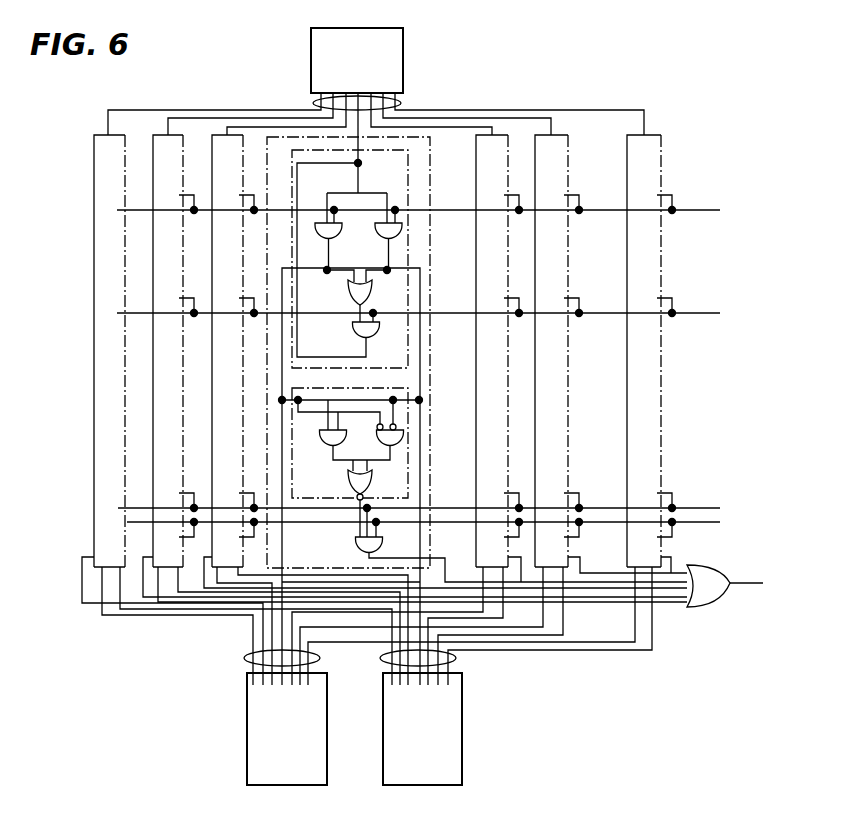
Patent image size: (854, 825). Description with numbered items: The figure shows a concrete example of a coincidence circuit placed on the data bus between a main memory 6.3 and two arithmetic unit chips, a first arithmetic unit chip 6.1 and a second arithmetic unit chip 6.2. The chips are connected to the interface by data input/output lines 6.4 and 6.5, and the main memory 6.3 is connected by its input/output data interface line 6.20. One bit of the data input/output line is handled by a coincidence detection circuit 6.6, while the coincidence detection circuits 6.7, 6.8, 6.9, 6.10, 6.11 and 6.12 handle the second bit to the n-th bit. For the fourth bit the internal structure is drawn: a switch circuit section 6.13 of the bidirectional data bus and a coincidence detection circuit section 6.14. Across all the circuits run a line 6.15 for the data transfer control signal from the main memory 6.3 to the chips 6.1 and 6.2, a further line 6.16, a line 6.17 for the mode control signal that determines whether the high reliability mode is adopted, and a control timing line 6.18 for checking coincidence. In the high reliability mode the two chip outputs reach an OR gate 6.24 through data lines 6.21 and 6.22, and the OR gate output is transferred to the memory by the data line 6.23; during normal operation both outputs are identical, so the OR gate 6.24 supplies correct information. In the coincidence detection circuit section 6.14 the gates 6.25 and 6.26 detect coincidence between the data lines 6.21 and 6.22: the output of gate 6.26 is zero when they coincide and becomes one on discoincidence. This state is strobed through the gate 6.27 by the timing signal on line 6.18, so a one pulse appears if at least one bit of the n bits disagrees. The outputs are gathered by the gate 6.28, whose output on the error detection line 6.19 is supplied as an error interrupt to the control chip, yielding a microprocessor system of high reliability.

The first arithmetic unit chip 6.1 is at (247, 736).
The second arithmetic unit chip 6.2 is at (462, 738).
The main memory 6.3 is at (403, 50).
The data input/output line 6.4 is at (244, 658).
The data input/output line 6.5 is at (457, 660).
The coincidence detection circuit 6.6 is at (93, 410).
The coincidence detection circuit 6.7 is at (152, 413).
The coincidence detection circuit 6.8 is at (212, 413).
The coincidence detection circuit 6.9 is at (267, 562).
The coincidence detection circuit 6.10 is at (476, 412).
The coincidence detection circuit 6.11 is at (569, 397).
The coincidence detection circuit 6.12 is at (661, 385).
The switch circuit section 6.13 is at (412, 194).
The coincidence detection circuit section 6.14 is at (410, 412).
The data transfer control signal line 6.15 is at (673, 205).
The control line 6.16 is at (673, 310).
The mode control signal line 6.17 is at (673, 505).
The control timing line 6.18 is at (673, 525).
The error detection line 6.19 is at (750, 585).
The input/output data interface line 6.20 is at (402, 103).
The data line 6.21 is at (410, 350).
The data line 6.22 is at (298, 355).
The data line 6.23 is at (312, 188).
The OR gate 6.24 is at (348, 298).
The gate 6.25 is at (338, 447).
The gate 6.26 is at (348, 483).
The gate 6.27 is at (357, 543).
The gate 6.28 is at (690, 607).